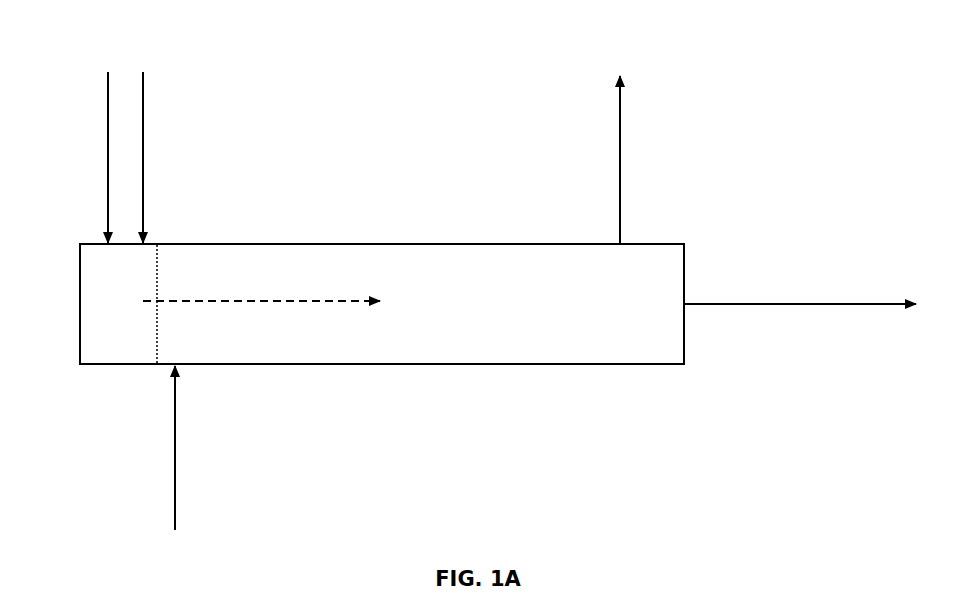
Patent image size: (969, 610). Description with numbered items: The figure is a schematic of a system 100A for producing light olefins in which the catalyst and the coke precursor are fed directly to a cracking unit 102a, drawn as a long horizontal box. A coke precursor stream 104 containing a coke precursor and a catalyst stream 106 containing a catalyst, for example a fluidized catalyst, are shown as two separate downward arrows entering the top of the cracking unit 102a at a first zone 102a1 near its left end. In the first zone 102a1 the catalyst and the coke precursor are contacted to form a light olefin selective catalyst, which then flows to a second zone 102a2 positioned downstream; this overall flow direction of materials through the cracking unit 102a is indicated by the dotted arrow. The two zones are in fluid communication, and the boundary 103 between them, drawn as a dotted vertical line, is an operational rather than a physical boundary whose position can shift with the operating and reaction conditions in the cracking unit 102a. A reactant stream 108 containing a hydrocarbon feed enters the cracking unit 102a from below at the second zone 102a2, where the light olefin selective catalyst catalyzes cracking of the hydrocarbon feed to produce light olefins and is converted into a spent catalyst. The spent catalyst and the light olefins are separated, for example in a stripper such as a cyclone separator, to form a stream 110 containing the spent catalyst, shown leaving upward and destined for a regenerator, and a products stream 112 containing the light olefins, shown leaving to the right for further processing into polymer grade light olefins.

The system 100A is at (77, 70).
The coke precursor stream 104 is at (108, 152).
The catalyst stream 106 is at (143, 165).
The cracking unit 102a is at (341, 365).
The first zone 102a1 is at (116, 335).
The second zone 102a2 is at (277, 324).
The boundary 103 is at (157, 281).
The reactant stream 108 is at (175, 514).
The stream containing spent catalyst 110 is at (620, 118).
The products stream 112 is at (796, 302).